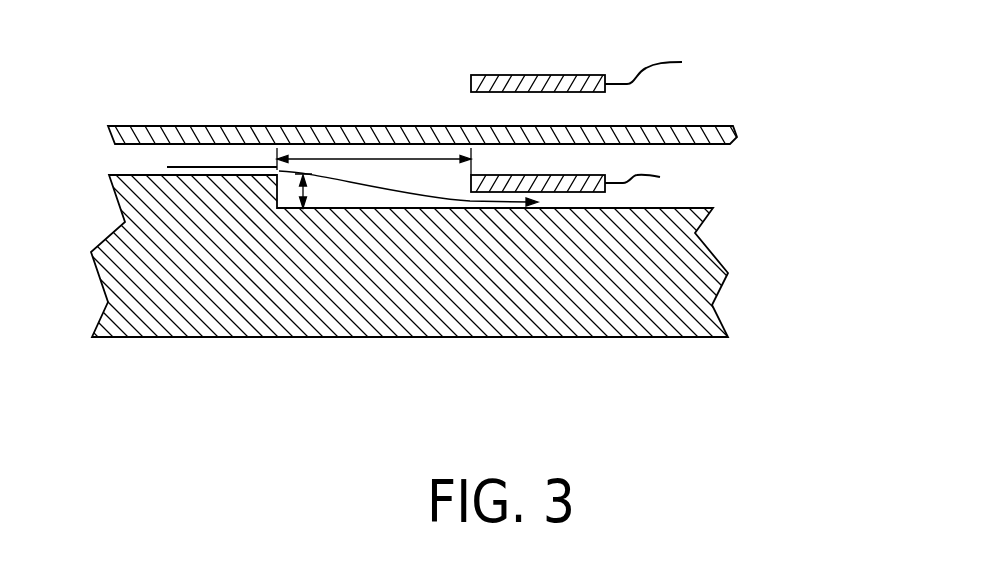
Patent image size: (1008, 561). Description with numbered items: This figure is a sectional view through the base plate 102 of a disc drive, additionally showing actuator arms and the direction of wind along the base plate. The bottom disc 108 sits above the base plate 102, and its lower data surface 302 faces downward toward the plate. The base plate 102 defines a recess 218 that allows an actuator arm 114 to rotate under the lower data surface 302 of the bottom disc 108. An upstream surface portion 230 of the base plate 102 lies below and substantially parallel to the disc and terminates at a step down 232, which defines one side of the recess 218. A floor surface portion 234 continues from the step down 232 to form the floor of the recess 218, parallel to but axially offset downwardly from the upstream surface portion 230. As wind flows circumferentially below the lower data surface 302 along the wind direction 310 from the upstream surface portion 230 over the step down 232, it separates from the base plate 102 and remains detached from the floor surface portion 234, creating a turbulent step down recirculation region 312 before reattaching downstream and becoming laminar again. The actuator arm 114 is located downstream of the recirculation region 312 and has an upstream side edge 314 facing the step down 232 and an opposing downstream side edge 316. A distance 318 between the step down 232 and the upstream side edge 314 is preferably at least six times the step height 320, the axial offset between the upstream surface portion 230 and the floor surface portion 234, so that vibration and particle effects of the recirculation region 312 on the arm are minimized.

The base plate 102 is at (350, 312).
The bottom disc 108 is at (593, 130).
The actuator arm 114 is at (522, 84).
The recess 218 is at (758, 118).
The upstream surface portion 230 is at (125, 175).
The step down 232 is at (276, 190).
The floor surface portion 234 is at (700, 207).
The lower data surface 302 is at (717, 143).
The wind direction 310 is at (181, 167).
The step down recirculation region 312 is at (327, 177).
The upstream side edge 314 is at (471, 82).
The downstream side edge 316 is at (668, 120).
The distance 318 is at (357, 158).
The step height 320 is at (307, 193).